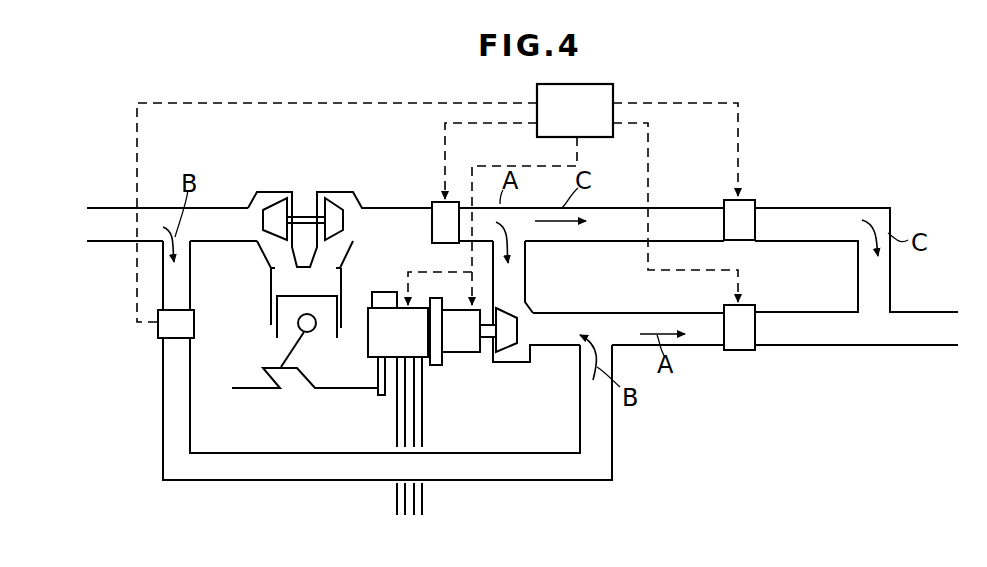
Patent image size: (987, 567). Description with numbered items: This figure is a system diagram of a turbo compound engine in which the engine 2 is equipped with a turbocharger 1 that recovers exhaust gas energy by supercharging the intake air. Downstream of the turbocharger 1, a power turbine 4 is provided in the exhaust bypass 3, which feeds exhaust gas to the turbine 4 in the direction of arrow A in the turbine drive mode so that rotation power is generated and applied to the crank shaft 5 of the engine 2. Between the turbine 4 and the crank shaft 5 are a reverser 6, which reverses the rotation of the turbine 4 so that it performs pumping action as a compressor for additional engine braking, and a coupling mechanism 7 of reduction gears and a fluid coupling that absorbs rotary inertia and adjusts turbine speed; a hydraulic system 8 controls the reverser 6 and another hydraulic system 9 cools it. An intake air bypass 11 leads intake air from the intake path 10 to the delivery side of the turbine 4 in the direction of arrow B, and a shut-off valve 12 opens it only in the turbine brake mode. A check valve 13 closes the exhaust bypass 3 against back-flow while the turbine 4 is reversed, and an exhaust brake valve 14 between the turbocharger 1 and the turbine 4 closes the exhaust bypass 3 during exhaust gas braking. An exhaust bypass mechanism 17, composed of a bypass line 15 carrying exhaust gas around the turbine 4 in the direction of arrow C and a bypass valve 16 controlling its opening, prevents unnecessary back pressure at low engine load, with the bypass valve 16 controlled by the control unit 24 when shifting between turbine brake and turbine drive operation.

The turbocharger 1 is at (332, 186).
The engine 2 is at (263, 338).
The exhaust bypass 3 is at (565, 318).
The power turbine 4 is at (508, 340).
The crank shaft 5 is at (332, 392).
The reverser 6 is at (368, 350).
The coupling mechanism 7 is at (458, 340).
The hydraulic system 8 is at (422, 500).
The hydraulic system 9 is at (397, 505).
The intake path 10 is at (97, 223).
The intake air bypass 11 is at (233, 470).
The shut-off valve 12 is at (158, 330).
The check valve 13 is at (743, 342).
The exhaust brake valve 14 is at (438, 203).
The bypass line 15 is at (828, 208).
The bypass valve 16 is at (745, 208).
The exhaust bypass mechanism 17 is at (807, 167).
The control unit 24 is at (545, 98).